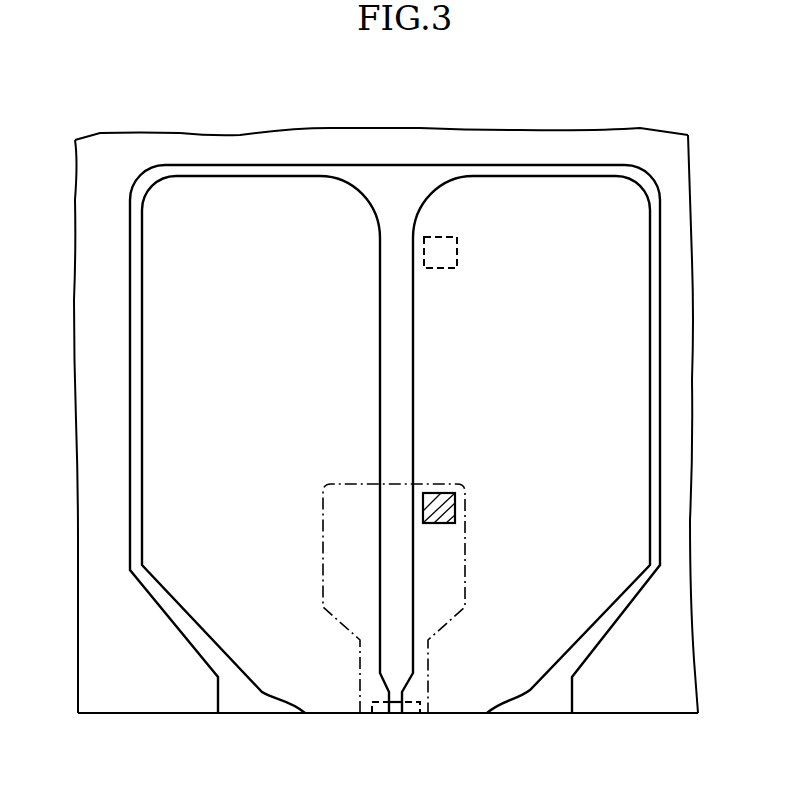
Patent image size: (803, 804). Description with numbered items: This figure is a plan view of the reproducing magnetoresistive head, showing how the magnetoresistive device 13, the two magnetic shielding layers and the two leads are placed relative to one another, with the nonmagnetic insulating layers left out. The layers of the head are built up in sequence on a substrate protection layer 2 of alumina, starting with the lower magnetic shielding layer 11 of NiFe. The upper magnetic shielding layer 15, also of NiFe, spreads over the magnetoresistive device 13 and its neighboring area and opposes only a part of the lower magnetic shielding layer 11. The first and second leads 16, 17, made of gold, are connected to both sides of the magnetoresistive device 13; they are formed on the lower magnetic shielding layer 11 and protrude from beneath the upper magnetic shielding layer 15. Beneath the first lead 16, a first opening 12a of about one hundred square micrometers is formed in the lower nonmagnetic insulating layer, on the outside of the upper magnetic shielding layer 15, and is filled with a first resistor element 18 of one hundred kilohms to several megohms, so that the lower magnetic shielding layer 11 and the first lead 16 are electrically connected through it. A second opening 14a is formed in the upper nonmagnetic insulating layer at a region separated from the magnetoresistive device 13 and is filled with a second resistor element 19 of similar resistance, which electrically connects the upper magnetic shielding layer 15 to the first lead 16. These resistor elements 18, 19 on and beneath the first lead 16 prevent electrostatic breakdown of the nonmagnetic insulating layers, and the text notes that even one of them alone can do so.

The substrate protection layer 2 is at (460, 148).
The lower magnetic shielding layer 11 is at (392, 165).
The first opening 12a is at (460, 252).
The magnetoresistive device 13 is at (392, 715).
The second opening 14a is at (442, 525).
The upper magnetic shielding layer 15 is at (320, 590).
The first lead 16 is at (625, 320).
The second lead 17 is at (162, 350).
The first resistor element 18 is at (440, 268).
The second resistor element 19 is at (443, 493).